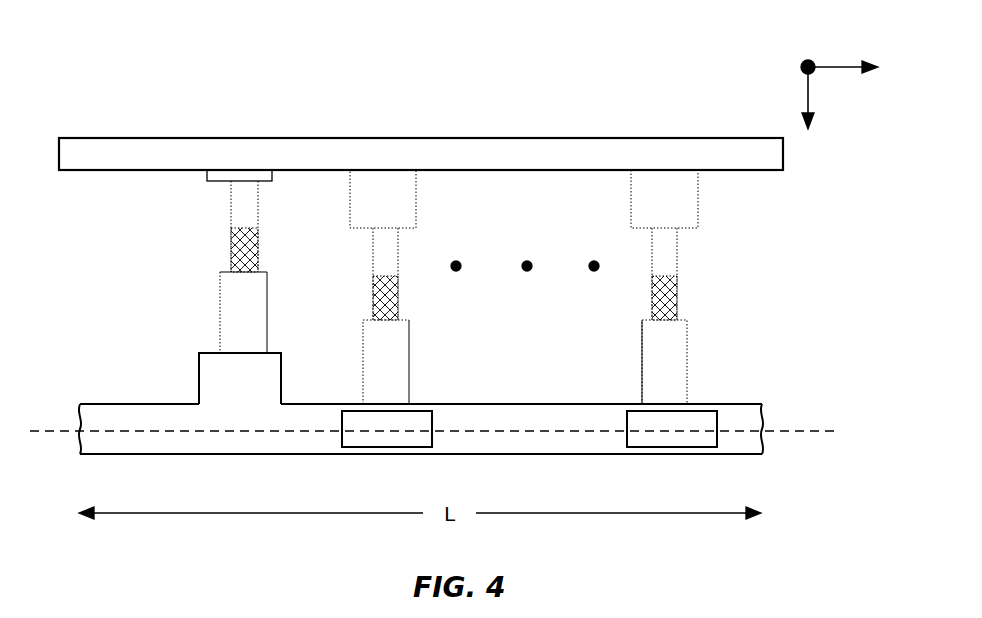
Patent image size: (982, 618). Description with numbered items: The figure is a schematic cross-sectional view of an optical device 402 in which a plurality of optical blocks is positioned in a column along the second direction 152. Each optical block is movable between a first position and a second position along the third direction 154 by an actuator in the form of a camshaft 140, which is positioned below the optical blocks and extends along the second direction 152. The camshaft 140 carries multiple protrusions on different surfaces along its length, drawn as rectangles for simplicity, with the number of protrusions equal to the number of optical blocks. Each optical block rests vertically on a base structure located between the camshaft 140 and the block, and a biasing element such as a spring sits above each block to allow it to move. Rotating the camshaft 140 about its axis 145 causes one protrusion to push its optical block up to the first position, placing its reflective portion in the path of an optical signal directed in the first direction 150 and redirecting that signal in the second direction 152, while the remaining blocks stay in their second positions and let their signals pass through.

The optical device 402 is at (362, 97).
The camshaft 140 is at (172, 449).
The axis 145 is at (813, 431).
The first direction 150 is at (804, 61).
The second direction 152 is at (857, 58).
The third direction 154 is at (827, 101).